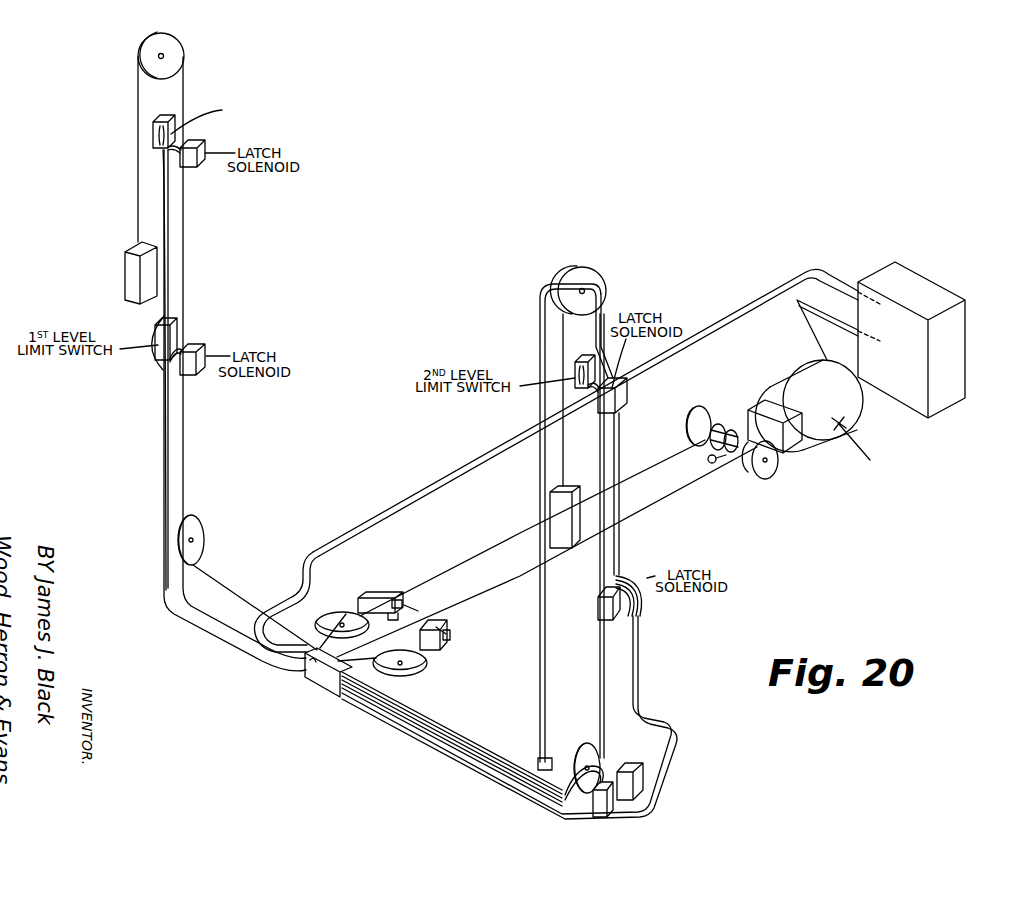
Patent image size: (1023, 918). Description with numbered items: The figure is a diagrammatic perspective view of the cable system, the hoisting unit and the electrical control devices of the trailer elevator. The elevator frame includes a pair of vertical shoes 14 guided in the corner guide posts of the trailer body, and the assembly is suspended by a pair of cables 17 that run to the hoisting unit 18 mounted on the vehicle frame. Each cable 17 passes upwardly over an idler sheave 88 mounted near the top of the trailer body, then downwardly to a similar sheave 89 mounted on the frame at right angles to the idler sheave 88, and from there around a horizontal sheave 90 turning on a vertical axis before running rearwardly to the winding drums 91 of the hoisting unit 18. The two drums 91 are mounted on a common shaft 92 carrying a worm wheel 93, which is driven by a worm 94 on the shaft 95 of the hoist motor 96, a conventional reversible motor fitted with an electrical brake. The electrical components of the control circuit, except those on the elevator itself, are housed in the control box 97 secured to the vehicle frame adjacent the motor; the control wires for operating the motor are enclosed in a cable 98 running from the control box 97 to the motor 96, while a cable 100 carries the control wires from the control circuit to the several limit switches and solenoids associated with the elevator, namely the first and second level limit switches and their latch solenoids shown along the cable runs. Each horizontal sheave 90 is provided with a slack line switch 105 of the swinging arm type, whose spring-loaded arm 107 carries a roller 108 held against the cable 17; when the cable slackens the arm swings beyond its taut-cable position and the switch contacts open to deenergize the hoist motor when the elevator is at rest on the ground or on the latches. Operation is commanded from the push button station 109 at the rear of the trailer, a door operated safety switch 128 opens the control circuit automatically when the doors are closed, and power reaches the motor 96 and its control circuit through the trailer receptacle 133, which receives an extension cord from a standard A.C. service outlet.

The vertical shoe 14 is at (125, 283).
The cable 17 is at (137, 126).
The hoisting unit 18 is at (862, 445).
The idler sheave 88 is at (176, 53).
The sheave 89 is at (194, 530).
The sheave 90 is at (334, 617).
The winding drum 91 is at (703, 415).
The common shaft 92 is at (734, 430).
The worm wheel 93 is at (721, 424).
The worm 94 is at (719, 462).
The shaft 95 is at (781, 426).
The hoist motor 96 is at (846, 409).
The control box 97 is at (955, 352).
The cable 98 is at (828, 312).
The cable 100 is at (284, 600).
The slack line switch 105 is at (388, 571).
The arm 107 is at (408, 598).
The roller 108 is at (411, 612).
The push button station 109 is at (615, 801).
The door operated safety switch 128 is at (540, 762).
The trailer receptacle 133 is at (640, 780).